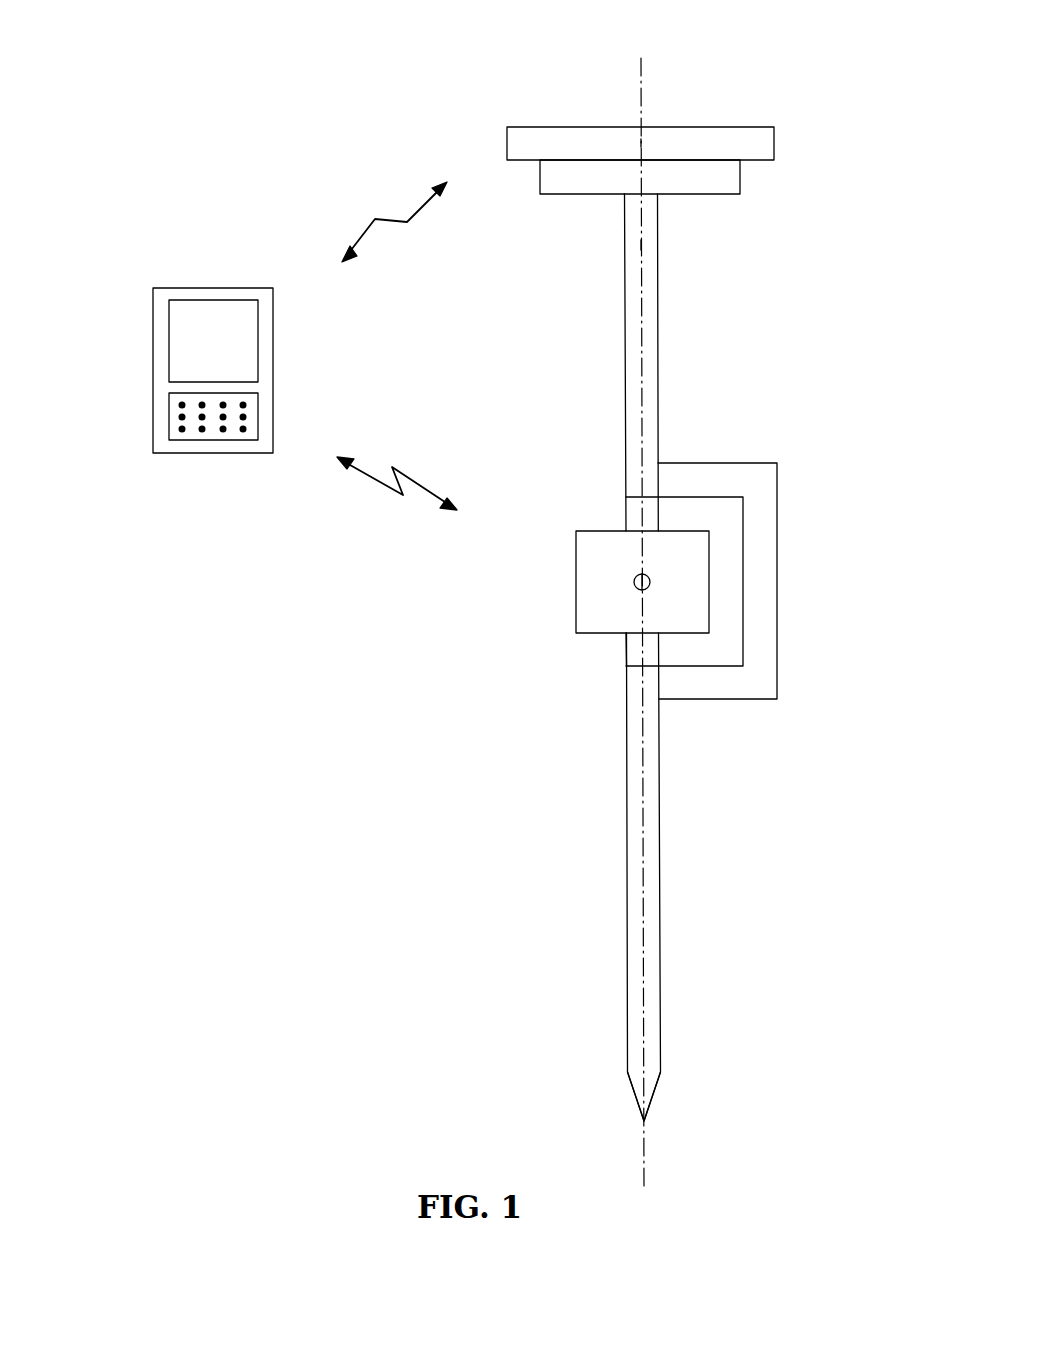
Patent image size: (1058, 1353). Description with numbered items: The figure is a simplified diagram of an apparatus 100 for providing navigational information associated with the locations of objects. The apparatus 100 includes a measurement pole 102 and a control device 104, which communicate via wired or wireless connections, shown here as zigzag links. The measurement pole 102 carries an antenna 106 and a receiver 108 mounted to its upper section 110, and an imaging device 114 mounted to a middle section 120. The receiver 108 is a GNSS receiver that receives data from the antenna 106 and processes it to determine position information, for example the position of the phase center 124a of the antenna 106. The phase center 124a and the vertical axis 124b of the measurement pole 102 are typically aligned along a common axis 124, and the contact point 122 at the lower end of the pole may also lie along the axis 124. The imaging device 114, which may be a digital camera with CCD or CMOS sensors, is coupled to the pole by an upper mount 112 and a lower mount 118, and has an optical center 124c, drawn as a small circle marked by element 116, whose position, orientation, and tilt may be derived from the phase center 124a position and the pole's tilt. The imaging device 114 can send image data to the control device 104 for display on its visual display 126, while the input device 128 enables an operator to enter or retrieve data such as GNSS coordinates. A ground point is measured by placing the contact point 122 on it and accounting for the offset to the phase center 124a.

The apparatus 100 is at (295, 88).
The measurement pole 102 is at (716, 122).
The control device 104 is at (151, 287).
The antenna 106 is at (776, 143).
The receiver 108 is at (742, 178).
The upper section 110 is at (659, 345).
The upper mount 112 is at (624, 512).
The imaging device 114 is at (575, 548).
The sensor element 116 is at (637, 590).
The lower mount 118 is at (624, 648).
The middle section 120 is at (778, 565).
The contact point 122 is at (644, 1121).
The axis 124 is at (636, 61).
The phase center 124a is at (638, 143).
The vertical axis 124b is at (643, 246).
The optical center 124c is at (633, 582).
The visual display 126 is at (168, 345).
The input device 128 is at (168, 420).